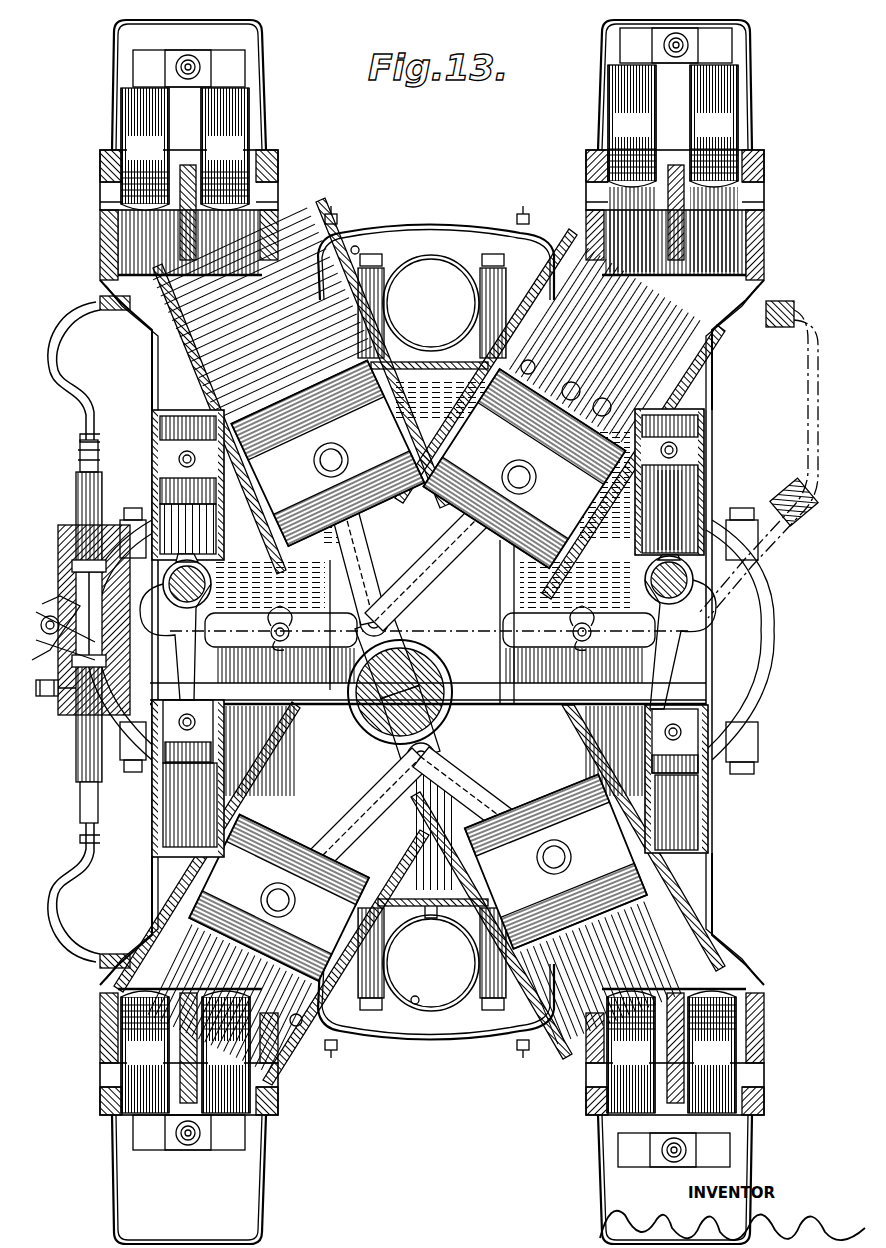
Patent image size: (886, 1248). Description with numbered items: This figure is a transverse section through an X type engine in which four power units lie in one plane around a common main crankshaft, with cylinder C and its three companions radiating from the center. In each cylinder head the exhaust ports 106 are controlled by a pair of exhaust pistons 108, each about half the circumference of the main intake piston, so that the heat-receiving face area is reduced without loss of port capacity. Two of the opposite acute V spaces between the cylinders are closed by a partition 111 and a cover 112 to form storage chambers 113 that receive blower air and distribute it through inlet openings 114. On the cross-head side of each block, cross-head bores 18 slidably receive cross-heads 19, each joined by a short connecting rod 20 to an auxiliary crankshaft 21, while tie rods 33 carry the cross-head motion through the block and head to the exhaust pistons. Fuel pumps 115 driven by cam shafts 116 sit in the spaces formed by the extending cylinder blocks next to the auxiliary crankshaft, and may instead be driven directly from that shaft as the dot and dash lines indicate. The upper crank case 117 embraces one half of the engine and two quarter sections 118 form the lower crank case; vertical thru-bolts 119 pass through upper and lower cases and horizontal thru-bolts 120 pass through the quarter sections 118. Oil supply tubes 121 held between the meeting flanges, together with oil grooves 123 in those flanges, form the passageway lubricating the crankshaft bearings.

The exhaust ports 106 is at (110, 188).
The exhaust pistons 108 is at (138, 116).
The partition 111 is at (431, 370).
The cover 112 is at (432, 224).
The storage chambers 113 is at (431, 633).
The inlet openings 114 is at (356, 246).
The fuel pumps 115 is at (80, 491).
The cam shafts 116 is at (62, 652).
The upper crank case 117 is at (415, 683).
The quarter sections 118 is at (429, 641).
The thru-bolts 119 is at (494, 256).
The horizontal thru-bolts 120 is at (50, 700).
The oil supply tubes 121 is at (272, 642).
The oil grooves 123 is at (236, 628).
The cross-head bores 18 is at (680, 504).
The cross-heads 19 is at (180, 460).
The short connecting rod 20 is at (172, 524).
The auxiliary crankshaft 21 is at (700, 600).
The tie rods 33 is at (166, 412).
The cylinder C is at (560, 414).